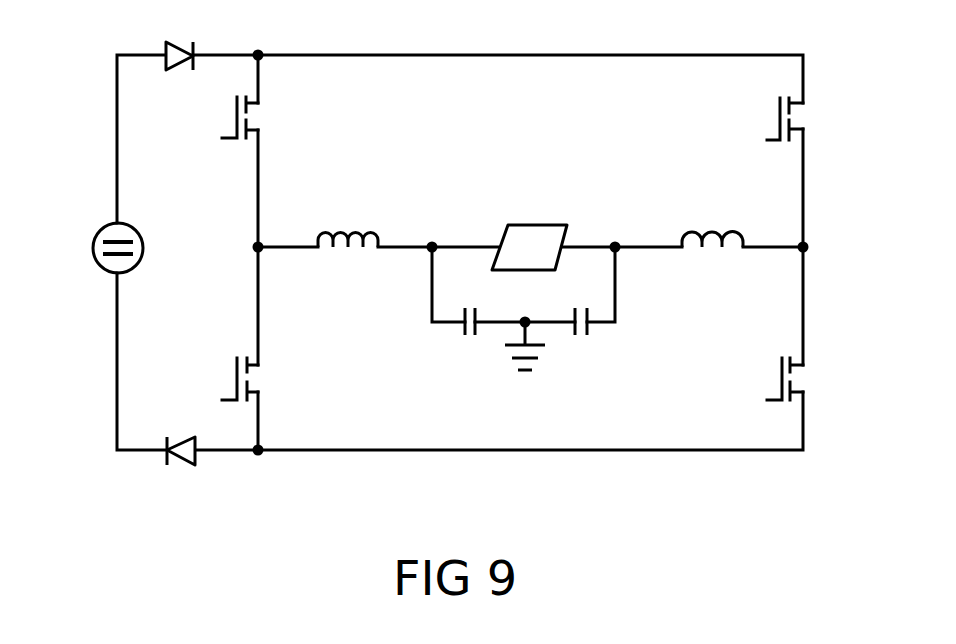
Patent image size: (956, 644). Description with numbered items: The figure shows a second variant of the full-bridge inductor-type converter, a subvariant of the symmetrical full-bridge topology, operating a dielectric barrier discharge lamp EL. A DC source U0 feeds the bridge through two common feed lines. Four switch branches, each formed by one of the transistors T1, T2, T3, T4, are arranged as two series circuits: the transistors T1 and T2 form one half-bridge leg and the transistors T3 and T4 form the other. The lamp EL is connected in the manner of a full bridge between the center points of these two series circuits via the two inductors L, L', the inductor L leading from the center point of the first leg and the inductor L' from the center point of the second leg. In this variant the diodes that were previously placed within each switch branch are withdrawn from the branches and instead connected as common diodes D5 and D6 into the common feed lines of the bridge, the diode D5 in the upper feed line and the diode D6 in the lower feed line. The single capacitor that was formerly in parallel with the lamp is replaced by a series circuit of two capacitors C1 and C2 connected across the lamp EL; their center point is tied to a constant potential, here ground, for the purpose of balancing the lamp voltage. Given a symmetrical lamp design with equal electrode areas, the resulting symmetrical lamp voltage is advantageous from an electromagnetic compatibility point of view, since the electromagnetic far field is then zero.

The DC voltage source U0 is at (94, 216).
The common diode D5 is at (182, 37).
The common diode D6 is at (175, 428).
The transistor T1 is at (267, 119).
The transistor T2 is at (266, 379).
The transistor T3 is at (813, 119).
The transistor T4 is at (813, 379).
The inductor L is at (348, 219).
The inductor L' is at (712, 219).
The dielectric barrier discharge lamp EL is at (529, 228).
The capacitor C1 is at (473, 342).
The capacitor C2 is at (584, 342).